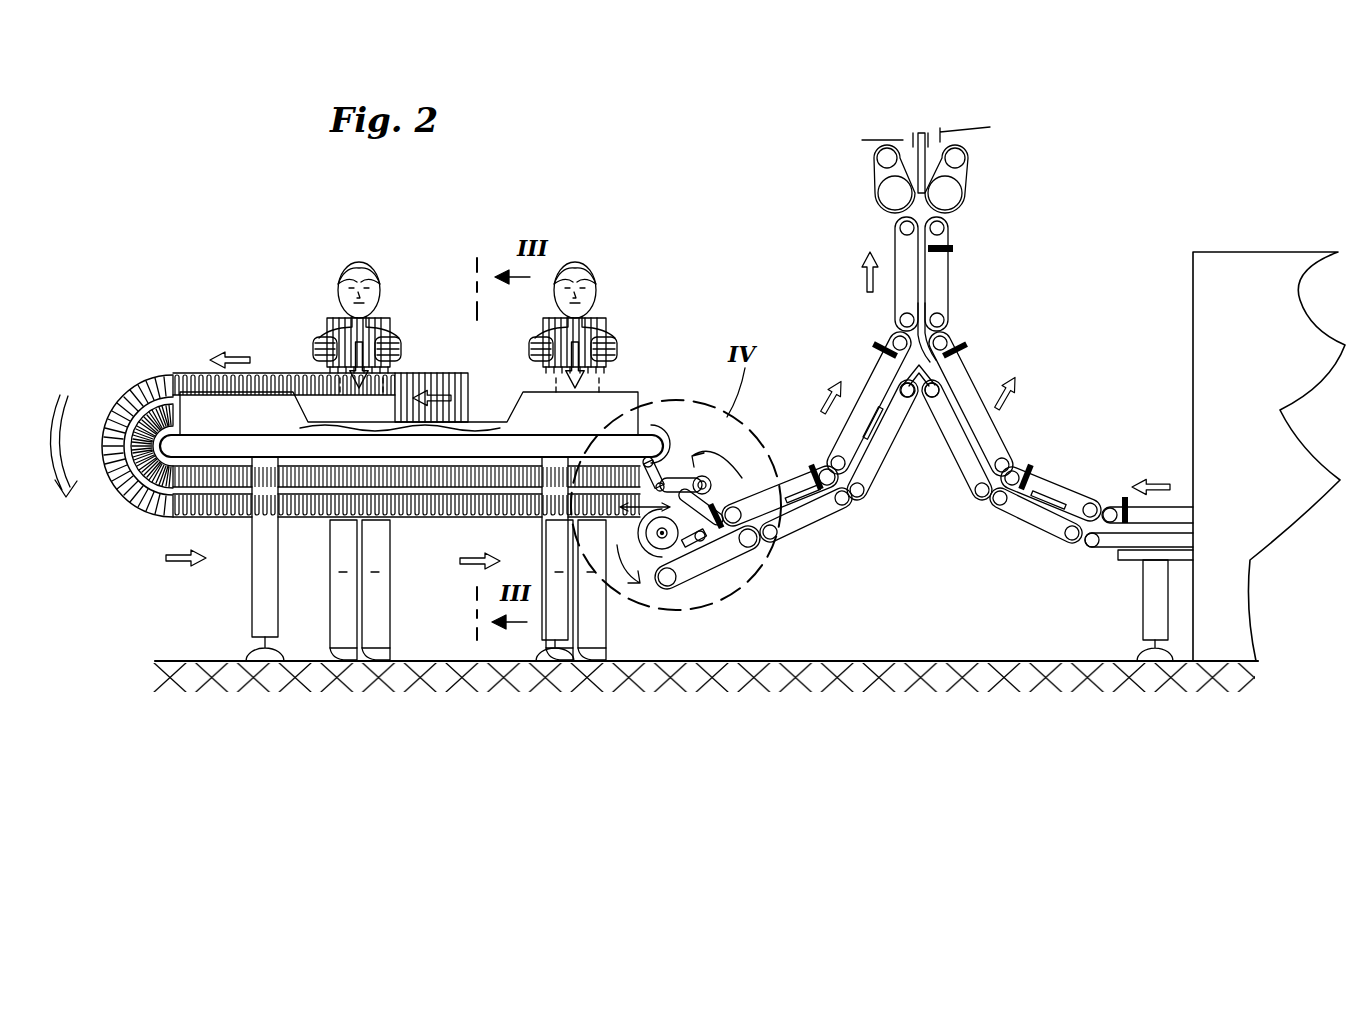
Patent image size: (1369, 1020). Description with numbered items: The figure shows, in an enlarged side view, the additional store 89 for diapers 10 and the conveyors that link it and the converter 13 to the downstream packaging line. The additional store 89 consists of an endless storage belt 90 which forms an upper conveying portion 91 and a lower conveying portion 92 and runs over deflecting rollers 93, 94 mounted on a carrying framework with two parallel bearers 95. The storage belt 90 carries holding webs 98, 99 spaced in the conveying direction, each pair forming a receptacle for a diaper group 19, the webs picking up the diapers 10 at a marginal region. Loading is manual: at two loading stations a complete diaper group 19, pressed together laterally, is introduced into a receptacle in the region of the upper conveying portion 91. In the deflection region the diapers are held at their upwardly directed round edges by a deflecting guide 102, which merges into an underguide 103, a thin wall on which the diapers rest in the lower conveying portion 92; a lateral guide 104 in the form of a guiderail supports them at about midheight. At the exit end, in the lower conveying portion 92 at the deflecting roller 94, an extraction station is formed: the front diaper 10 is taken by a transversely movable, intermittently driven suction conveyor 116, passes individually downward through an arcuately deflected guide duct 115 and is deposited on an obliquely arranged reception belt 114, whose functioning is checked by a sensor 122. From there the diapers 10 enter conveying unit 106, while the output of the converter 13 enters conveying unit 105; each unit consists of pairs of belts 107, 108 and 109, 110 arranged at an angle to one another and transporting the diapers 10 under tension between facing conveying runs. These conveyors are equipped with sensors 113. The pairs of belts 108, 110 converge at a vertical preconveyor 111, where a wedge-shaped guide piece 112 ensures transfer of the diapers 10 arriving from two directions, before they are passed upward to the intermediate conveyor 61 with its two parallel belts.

The diaper 10 is at (922, 163).
The converter 13 is at (1243, 268).
The diaper group 19 is at (320, 337).
The intermediate conveyor 61 is at (992, 180).
The additional store 89 is at (271, 277).
The storage belt 90 is at (365, 405).
The upper conveying portion 91 is at (484, 359).
The lower conveying portion 92 is at (440, 548).
The deflecting roller 93 is at (112, 416).
The deflecting roller 94 is at (645, 423).
The bearer 95 is at (213, 447).
The holding web 98 is at (410, 317).
The holding web 99 is at (506, 385).
The deflecting guide 102 is at (112, 382).
The underguide 103 is at (233, 522).
The lateral guide 104 is at (133, 506).
The conveying unit 105 is at (1028, 552).
The conveying unit 106 is at (841, 546).
The pair of belts 107 is at (1098, 474).
The pair of belts 108 is at (1031, 377).
The pair of belts 109 is at (795, 565).
The pair of belts 110 is at (907, 479).
The preconveyor 111 is at (966, 289).
The wedge-shaped guide piece 112 is at (937, 340).
The sensor 113 is at (953, 248).
The reception belt 114 is at (712, 556).
The guide duct 115 is at (630, 548).
The suction conveyor 116 is at (667, 588).
The sensor 122 is at (727, 443).